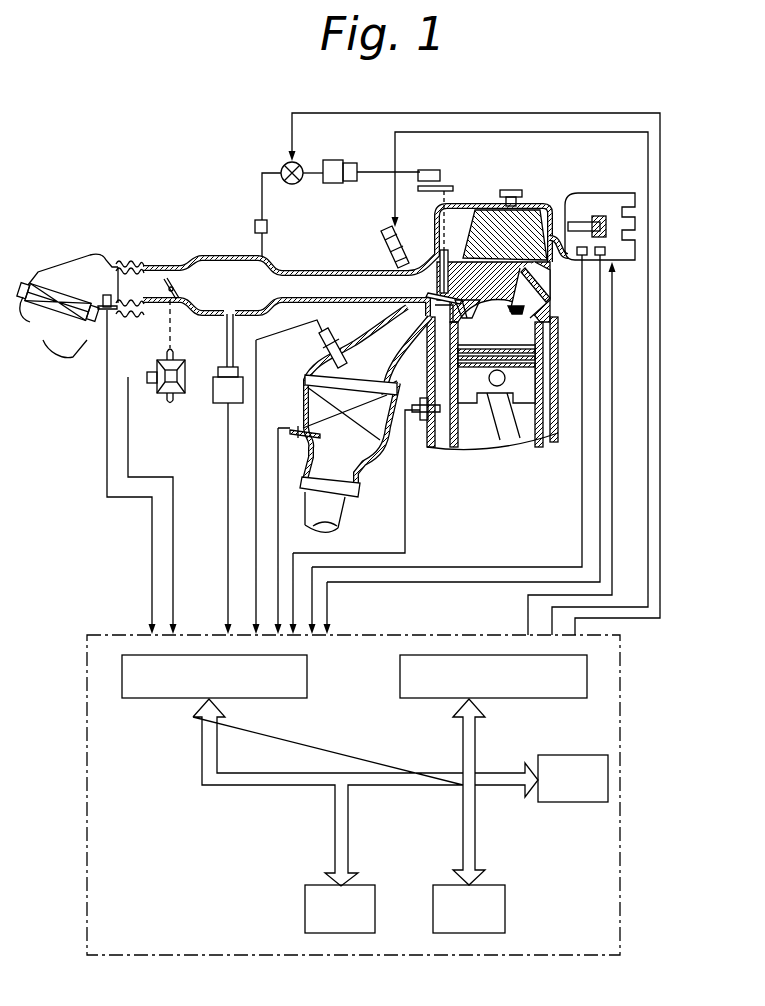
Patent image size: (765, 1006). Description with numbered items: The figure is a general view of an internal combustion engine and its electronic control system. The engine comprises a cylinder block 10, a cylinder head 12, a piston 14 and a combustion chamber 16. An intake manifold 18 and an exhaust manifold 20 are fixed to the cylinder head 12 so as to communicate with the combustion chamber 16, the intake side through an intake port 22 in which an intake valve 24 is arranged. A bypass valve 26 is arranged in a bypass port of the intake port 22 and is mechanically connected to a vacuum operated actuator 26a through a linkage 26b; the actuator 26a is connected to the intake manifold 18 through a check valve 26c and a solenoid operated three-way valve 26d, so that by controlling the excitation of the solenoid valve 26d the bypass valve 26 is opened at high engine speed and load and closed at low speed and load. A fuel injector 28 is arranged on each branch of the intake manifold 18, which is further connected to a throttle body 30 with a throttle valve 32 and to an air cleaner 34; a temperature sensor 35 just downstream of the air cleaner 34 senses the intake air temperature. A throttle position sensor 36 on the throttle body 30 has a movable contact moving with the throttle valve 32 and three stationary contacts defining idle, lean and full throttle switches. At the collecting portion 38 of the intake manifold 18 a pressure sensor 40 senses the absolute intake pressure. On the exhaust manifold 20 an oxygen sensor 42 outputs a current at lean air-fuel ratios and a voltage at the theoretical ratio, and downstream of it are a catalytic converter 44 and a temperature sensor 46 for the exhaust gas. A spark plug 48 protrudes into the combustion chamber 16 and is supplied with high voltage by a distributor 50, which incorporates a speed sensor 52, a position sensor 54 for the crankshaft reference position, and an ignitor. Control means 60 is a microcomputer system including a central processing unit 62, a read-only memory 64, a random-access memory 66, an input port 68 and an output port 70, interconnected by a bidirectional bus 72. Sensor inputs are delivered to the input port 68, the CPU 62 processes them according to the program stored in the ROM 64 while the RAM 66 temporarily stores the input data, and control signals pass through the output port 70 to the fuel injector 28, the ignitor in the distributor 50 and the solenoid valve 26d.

The cylinder block 10 is at (481, 434).
The cylinder head 12 is at (529, 222).
The piston 14 is at (508, 388).
The combustion chamber 16 is at (522, 330).
The intake manifold 18 is at (289, 268).
The exhaust manifold 20 is at (353, 343).
The intake port 22 is at (405, 240).
The intake valve 24 is at (486, 311).
The bypass valve 26 is at (430, 280).
The vacuum operated actuator 26a is at (347, 184).
The linkage 26b is at (440, 171).
The check valve 26c is at (253, 219).
The solenoid operated three-way valve 26d is at (283, 164).
The fuel injector 28 is at (385, 250).
The throttle body 30 is at (155, 266).
The throttle valve 32 is at (172, 278).
The air cleaner 34 is at (58, 285).
The temperature sensor 35 is at (111, 310).
The throttle position sensor 36 is at (162, 394).
The collecting portion 38 is at (228, 256).
The pressure sensor 40 is at (216, 397).
The oxygen sensor 42 is at (322, 340).
The catalytic converter 44 is at (367, 447).
The temperature sensor 46 is at (300, 430).
The spark plug 48 is at (542, 289).
The distributor 50 is at (610, 206).
The speed sensor 52 is at (616, 272).
The position sensor 54 is at (574, 221).
The control means 60 is at (87, 748).
The central processing unit 62 is at (576, 803).
The read-only memory 64 is at (497, 887).
The random-access memory 66 is at (366, 887).
The input port 68 is at (286, 690).
The output port 70 is at (421, 695).
The bidirectional bus 72 is at (342, 784).